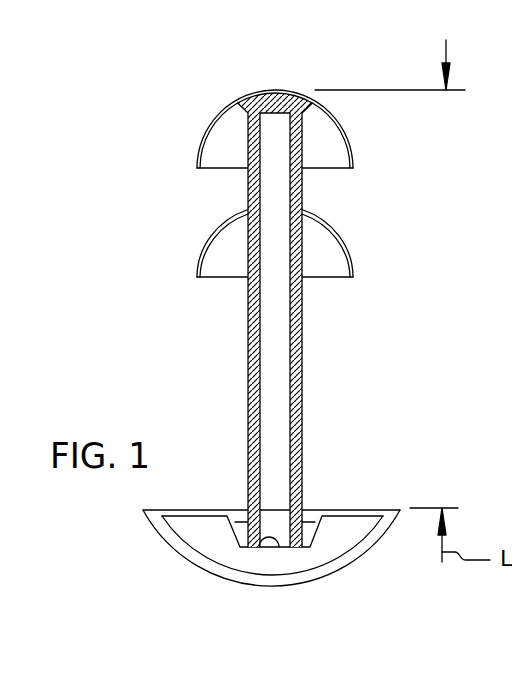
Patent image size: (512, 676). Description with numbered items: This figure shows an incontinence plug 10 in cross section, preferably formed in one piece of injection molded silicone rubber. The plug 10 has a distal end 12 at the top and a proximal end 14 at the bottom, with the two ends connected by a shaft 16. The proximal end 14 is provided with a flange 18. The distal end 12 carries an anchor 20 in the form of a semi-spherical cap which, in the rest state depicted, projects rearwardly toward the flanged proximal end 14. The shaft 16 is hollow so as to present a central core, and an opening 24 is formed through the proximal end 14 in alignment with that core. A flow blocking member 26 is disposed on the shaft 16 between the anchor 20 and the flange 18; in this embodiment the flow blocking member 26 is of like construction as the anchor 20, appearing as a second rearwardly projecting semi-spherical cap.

The incontinence plug 10 is at (120, 302).
The distal end 12 is at (278, 88).
The proximal end 14 is at (320, 578).
The shaft 16 is at (247, 393).
The flange 18 is at (355, 508).
The anchor 20 is at (212, 113).
The opening 24 is at (270, 546).
The flow blocking member 26 is at (207, 242).